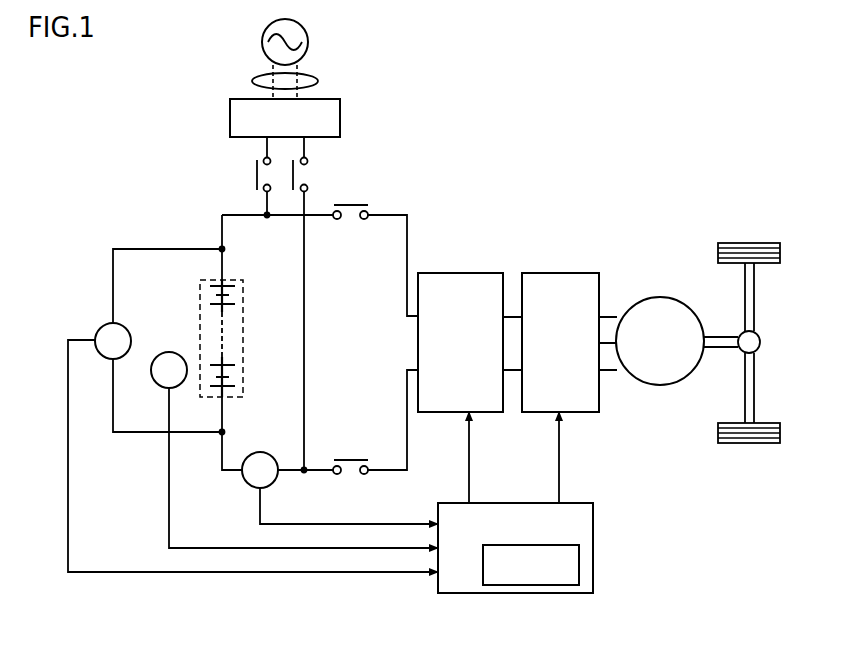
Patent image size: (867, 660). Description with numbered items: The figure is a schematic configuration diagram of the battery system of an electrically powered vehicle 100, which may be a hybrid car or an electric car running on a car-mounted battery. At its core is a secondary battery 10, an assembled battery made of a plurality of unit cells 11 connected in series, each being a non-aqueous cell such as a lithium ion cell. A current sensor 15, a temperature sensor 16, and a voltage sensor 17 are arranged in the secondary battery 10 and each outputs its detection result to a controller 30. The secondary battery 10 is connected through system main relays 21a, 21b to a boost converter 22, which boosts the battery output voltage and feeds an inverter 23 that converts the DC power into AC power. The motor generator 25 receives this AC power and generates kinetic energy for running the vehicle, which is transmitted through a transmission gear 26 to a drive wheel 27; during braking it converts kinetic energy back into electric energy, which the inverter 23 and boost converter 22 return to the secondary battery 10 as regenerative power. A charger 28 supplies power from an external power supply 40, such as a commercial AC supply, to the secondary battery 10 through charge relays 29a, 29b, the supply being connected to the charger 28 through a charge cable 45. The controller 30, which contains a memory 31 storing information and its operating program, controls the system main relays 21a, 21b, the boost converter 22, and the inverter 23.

The electrically powered vehicle 100 is at (652, 91).
The secondary battery 10 is at (243, 338).
The unit cell 11 is at (230, 300).
The current sensor 15 is at (258, 452).
The temperature sensor 16 is at (171, 351).
The voltage sensor 17 is at (106, 325).
The system main relay 21a is at (351, 222).
The system main relay 21b is at (351, 476).
The boost converter 22 is at (449, 272).
The inverter 23 is at (540, 272).
The motor generator 25 is at (659, 297).
The transmission gear 26 is at (761, 342).
The drive wheel 27 is at (752, 243).
The charger 28 is at (340, 118).
The charge relay 29a is at (250, 176).
The charge relay 29b is at (310, 176).
The controller 30 is at (473, 595).
The memory 31 is at (579, 566).
The external power supply 40 is at (308, 42).
The charge cable 45 is at (318, 80).